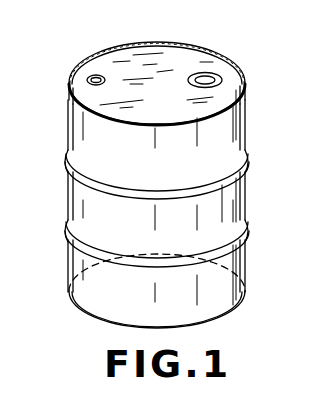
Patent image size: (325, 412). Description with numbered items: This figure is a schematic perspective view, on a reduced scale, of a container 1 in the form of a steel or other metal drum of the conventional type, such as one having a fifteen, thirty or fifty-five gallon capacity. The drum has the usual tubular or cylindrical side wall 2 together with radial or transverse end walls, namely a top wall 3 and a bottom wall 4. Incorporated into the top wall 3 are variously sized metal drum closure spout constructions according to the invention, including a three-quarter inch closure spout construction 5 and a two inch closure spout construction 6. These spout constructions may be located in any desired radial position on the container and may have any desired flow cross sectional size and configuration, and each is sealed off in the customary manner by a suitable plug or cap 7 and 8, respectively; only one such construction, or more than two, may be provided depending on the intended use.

The container 1 is at (73, 123).
The side wall 2 is at (68, 200).
The top wall 3 is at (147, 54).
The bottom wall 4 is at (72, 300).
The ¾" closure spout construction 5 is at (87, 80).
The 2" closure spout construction 6 is at (218, 73).
The plug or cap 7 is at (92, 76).
The plug or cap 8 is at (205, 78).